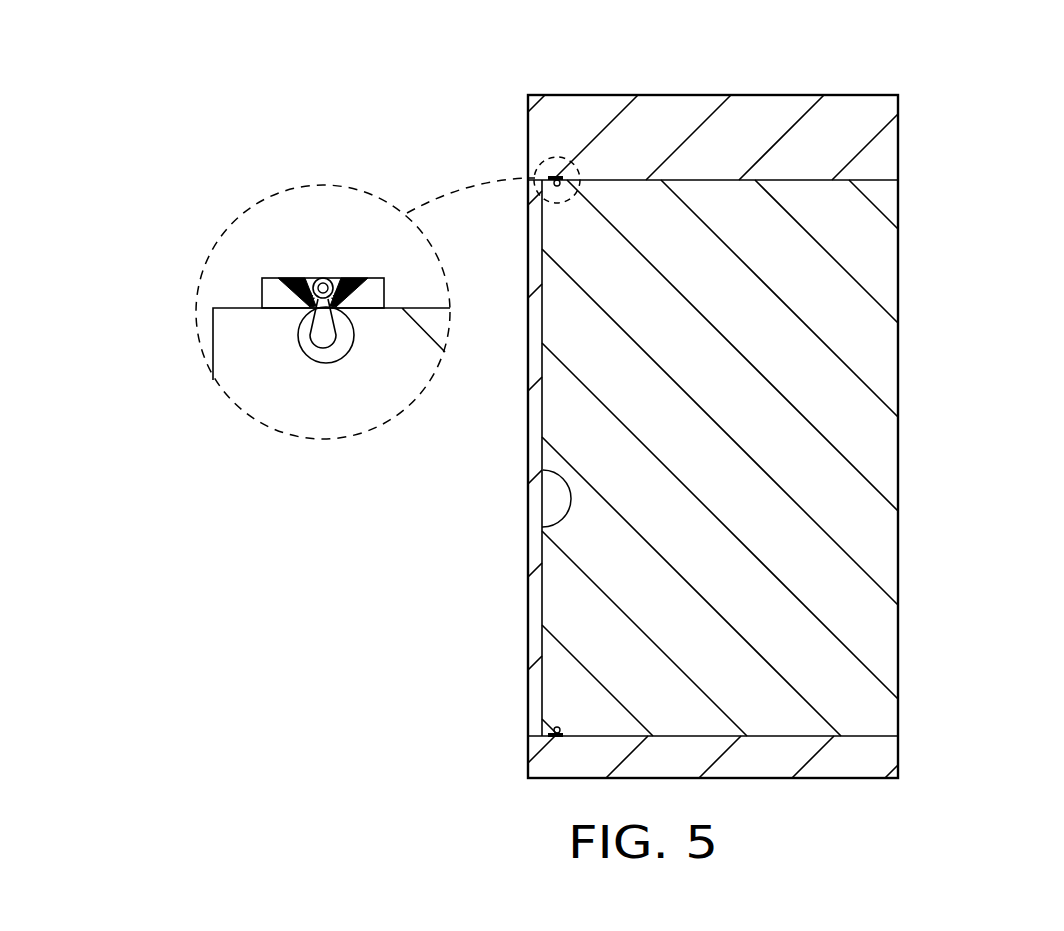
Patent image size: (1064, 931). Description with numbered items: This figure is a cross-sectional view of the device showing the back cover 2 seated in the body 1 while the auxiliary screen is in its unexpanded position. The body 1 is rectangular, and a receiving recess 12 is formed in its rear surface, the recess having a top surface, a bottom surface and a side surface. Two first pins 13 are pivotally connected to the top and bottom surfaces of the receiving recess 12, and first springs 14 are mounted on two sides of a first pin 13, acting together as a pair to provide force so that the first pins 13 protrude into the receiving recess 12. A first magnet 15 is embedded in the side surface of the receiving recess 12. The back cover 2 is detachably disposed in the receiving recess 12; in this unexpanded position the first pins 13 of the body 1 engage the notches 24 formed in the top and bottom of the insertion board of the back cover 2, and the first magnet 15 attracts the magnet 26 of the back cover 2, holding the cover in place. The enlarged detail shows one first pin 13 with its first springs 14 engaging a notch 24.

The body 1 is at (837, 130).
The back cover 2 is at (828, 377).
The receiving recess 12 is at (803, 182).
The first pin 13 is at (322, 335).
The first spring 14 is at (302, 278).
The first magnet 15 is at (542, 527).
The notch 24 is at (344, 327).
The magnet 26 is at (542, 452).